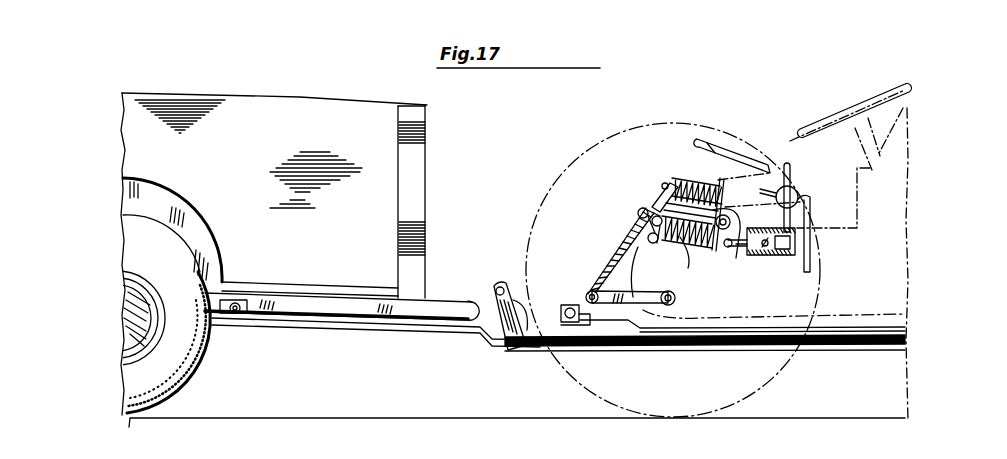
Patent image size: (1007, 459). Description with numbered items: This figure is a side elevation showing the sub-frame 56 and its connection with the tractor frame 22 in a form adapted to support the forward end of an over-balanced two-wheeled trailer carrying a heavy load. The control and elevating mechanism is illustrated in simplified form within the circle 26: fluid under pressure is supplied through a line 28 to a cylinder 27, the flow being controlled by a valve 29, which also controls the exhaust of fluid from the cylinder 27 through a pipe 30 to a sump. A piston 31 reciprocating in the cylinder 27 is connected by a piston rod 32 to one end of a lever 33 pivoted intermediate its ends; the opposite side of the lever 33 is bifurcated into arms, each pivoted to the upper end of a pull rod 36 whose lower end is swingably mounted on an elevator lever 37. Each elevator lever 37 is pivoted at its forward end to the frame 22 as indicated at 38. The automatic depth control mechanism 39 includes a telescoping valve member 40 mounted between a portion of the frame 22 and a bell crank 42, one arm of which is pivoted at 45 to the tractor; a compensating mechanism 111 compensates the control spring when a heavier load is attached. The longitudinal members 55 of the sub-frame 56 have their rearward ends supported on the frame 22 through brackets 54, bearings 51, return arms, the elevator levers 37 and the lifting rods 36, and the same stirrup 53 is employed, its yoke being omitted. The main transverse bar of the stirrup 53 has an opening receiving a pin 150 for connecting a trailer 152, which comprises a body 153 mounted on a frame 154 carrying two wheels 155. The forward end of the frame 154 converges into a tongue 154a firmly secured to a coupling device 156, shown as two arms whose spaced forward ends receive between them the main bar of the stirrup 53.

The frame 22 is at (864, 316).
The enlarged detail circle 26 is at (527, 233).
The cylinder 27 is at (773, 258).
The line 28 is at (812, 250).
The valve 29 is at (797, 190).
The pipe 30 is at (762, 192).
The piston 31 is at (751, 254).
The piston rod 32 is at (735, 246).
The lever 33 is at (722, 236).
The pull rod 36 is at (620, 243).
The elevator lever 37 is at (556, 292).
The pivot 38 is at (676, 298).
The automatic depth control mechanism 39 is at (686, 233).
The valve member 40 is at (683, 276).
The bell crank 42 is at (640, 227).
The pivot 45 is at (653, 244).
The transverse shaft 51 is at (578, 330).
The stirrup member 53 is at (532, 336).
The bracket member 54 is at (620, 328).
The longitudinal member 55 is at (862, 343).
The sub-frame 56 is at (816, 351).
The compensating mechanism 111 is at (686, 176).
The pin 150 is at (490, 303).
The trailer 152 is at (282, 74).
The body 153 is at (428, 162).
The frame 154 is at (337, 305).
The tongue 154a is at (431, 300).
The wheel 155 is at (197, 352).
The coupling device 156 is at (488, 338).